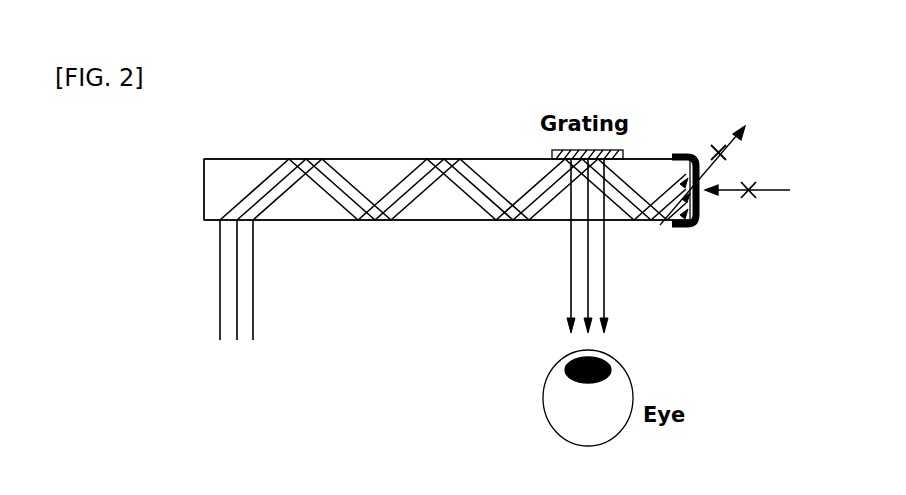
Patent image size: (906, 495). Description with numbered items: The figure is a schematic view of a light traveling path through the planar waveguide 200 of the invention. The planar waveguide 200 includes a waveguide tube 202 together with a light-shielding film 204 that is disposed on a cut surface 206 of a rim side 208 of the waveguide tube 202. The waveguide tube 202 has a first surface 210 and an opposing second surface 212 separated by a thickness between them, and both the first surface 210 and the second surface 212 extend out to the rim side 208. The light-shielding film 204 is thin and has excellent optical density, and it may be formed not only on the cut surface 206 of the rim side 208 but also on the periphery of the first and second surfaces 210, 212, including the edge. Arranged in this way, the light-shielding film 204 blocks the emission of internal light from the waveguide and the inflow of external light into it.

The planar waveguide 200 is at (236, 133).
The waveguide tube 202 is at (214, 203).
The light-shielding film 204 is at (714, 217).
The cut surface 206 is at (203, 173).
The rim side 208 is at (175, 198).
The first surface 210 is at (365, 159).
The second surface 212 is at (382, 222).